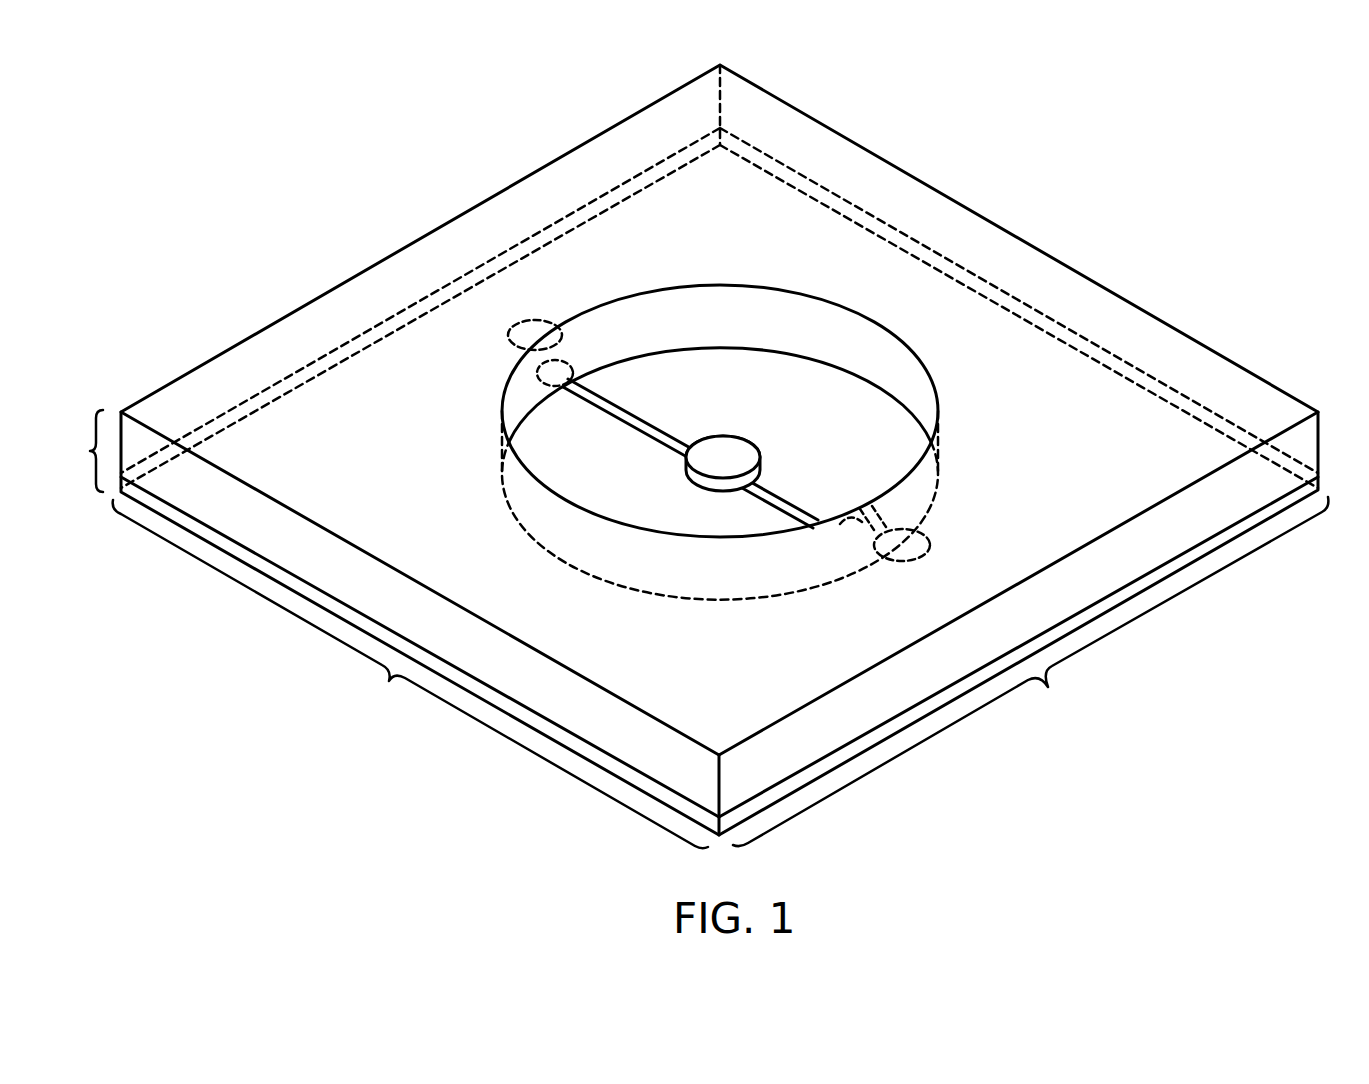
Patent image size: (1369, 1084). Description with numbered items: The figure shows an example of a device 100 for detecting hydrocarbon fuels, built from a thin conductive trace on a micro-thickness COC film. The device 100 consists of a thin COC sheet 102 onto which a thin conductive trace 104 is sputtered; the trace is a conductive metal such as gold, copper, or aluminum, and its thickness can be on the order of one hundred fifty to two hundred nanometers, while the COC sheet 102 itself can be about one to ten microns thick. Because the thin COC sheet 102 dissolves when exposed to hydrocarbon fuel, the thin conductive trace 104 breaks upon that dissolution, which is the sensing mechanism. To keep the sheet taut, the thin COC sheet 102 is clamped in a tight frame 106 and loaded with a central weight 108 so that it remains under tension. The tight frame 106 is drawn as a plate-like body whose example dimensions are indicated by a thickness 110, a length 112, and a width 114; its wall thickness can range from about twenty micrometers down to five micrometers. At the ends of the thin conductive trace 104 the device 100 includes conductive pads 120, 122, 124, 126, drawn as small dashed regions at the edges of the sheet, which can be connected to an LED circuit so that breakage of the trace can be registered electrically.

The device 100 is at (1272, 194).
The thin COC sheet 102 is at (620, 478).
The thin conductive trace 104 is at (633, 413).
The tight frame 106 is at (1013, 236).
The central weight 108 is at (733, 442).
The thickness 110 is at (70, 451).
The length 112 is at (410, 674).
The width 114 is at (1030, 671).
The conductive pad 120 is at (913, 548).
The conductive pad 122 is at (865, 510).
The conductive pad 124 is at (557, 360).
The conductive pad 126 is at (533, 320).